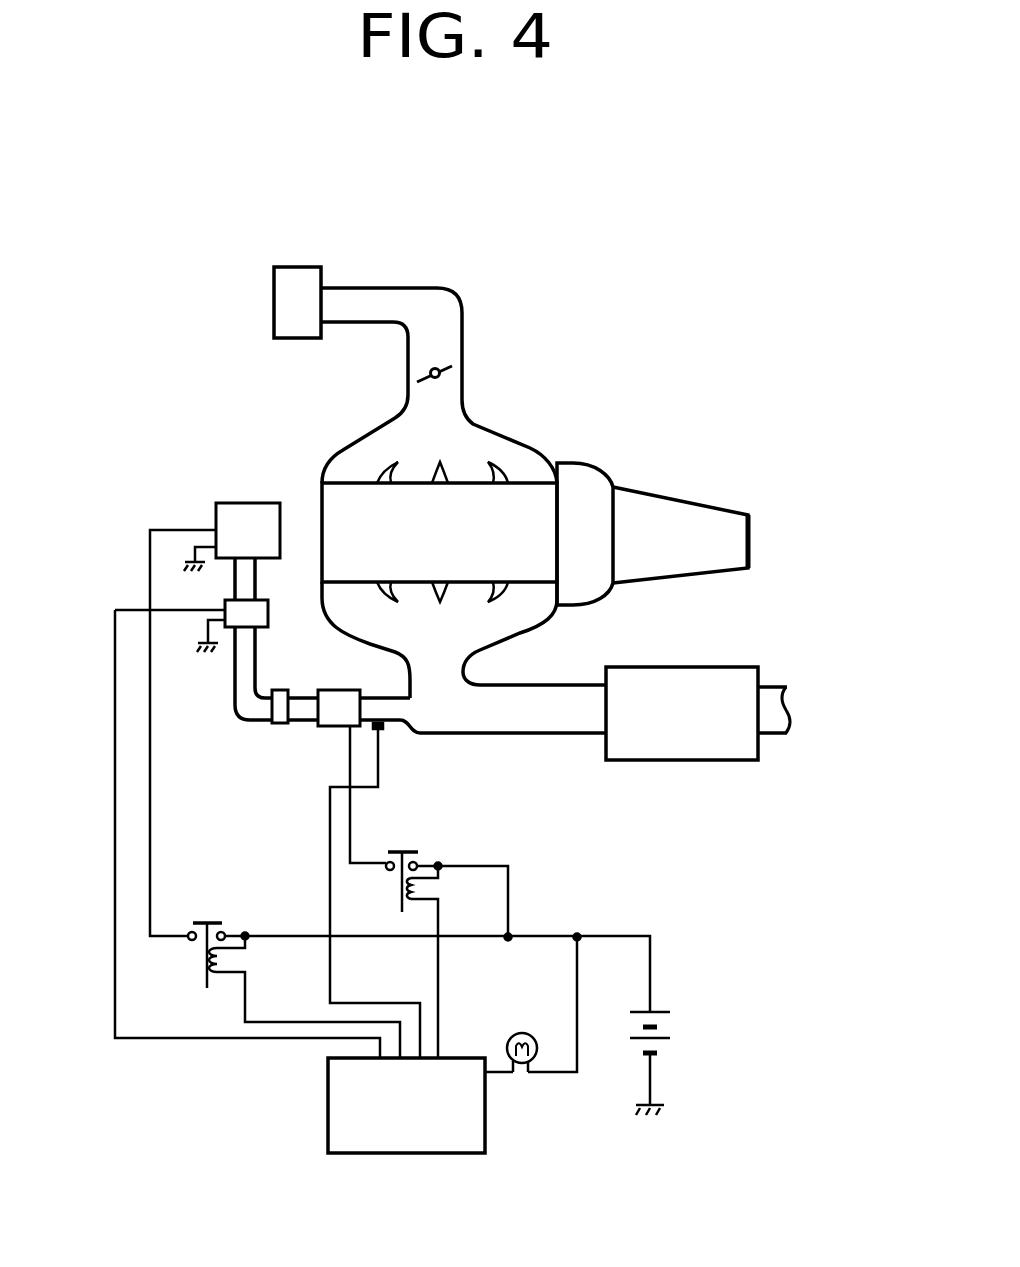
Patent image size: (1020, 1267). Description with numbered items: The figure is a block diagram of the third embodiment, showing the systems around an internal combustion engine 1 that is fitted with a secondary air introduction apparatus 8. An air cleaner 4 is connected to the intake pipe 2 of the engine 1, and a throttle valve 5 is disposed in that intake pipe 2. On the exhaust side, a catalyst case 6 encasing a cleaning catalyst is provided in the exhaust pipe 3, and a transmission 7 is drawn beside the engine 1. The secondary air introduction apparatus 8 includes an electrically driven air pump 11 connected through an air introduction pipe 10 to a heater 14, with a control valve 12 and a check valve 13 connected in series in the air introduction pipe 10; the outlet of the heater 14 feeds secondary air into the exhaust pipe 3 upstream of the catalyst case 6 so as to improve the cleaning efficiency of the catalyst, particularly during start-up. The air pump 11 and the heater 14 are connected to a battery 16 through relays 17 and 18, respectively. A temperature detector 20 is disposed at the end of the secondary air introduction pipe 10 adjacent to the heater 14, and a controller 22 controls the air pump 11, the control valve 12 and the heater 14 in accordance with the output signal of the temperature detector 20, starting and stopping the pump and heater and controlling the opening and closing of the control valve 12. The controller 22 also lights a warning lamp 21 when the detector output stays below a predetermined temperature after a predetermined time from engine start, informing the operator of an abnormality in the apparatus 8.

The internal combustion engine 1 is at (532, 488).
The intake pipe 2 is at (460, 440).
The exhaust pipe 3 is at (542, 723).
The air cleaner 4 is at (310, 268).
The throttle valve 5 is at (454, 366).
The catalyst case 6 is at (645, 760).
The transmission 7 is at (678, 513).
The secondary air introduction apparatus 8 is at (111, 603).
The air introduction pipe 10 is at (257, 583).
The air pump 11 is at (263, 508).
The control valve 12 is at (268, 625).
The check valve 13 is at (278, 728).
The heater 14 is at (332, 722).
The battery 16 is at (667, 1023).
The relay 17 is at (228, 928).
The relay 18 is at (423, 855).
The temperature detector 20 is at (387, 728).
The warning lamp 21 is at (522, 1033).
The controller 22 is at (485, 1115).